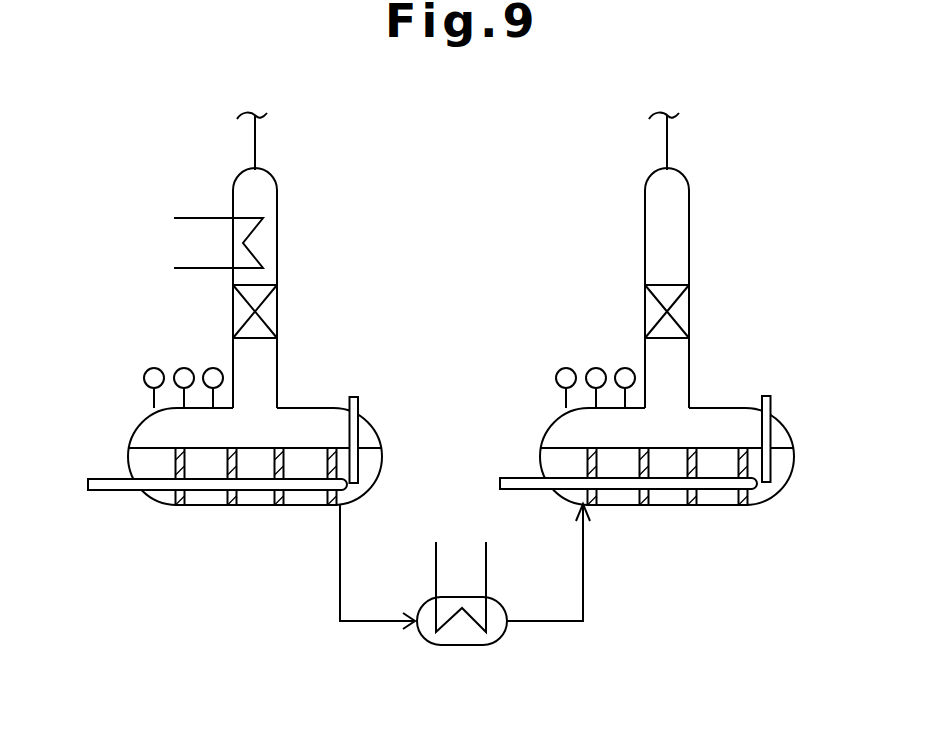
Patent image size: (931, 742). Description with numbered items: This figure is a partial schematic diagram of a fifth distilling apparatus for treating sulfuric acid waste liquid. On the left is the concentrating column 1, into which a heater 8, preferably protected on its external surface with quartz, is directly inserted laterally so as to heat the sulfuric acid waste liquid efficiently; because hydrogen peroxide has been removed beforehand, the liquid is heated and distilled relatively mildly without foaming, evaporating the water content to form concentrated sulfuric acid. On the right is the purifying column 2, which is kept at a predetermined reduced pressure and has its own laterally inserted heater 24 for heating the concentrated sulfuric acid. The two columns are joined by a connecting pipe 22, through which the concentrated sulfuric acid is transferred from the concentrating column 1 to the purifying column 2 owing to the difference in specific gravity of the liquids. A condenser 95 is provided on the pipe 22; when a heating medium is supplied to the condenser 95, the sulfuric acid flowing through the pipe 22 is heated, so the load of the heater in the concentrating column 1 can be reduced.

The concentrating column 1 is at (371, 421).
The purifying column 2 is at (791, 423).
The heater 8 is at (101, 477).
The heater 24 is at (508, 469).
The connecting pipe 22 is at (542, 615).
The condenser 95 is at (457, 649).